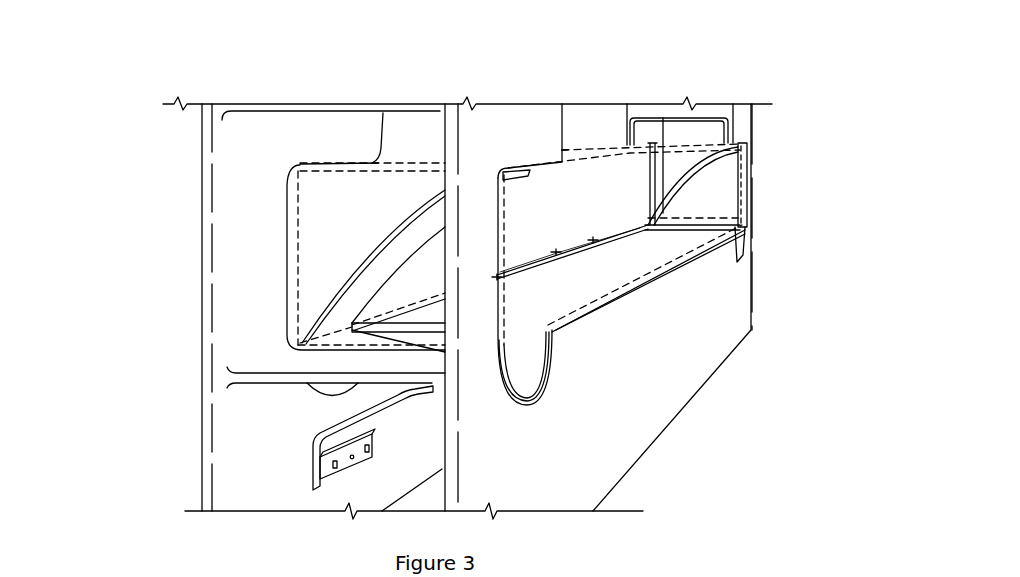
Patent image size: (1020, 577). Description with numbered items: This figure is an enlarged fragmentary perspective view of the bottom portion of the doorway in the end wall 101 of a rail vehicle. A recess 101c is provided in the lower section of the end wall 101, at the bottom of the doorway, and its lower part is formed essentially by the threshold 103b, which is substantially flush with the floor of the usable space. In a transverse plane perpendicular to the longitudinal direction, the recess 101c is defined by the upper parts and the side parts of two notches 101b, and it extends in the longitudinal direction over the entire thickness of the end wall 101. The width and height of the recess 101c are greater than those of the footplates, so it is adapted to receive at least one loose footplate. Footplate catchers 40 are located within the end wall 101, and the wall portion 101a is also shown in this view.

The footplate catcher 40 is at (324, 270).
The end wall 101 is at (736, 383).
The wall panel 101a is at (700, 297).
The notch 101b is at (748, 230).
The recess 101c is at (648, 158).
The threshold 103b is at (557, 280).